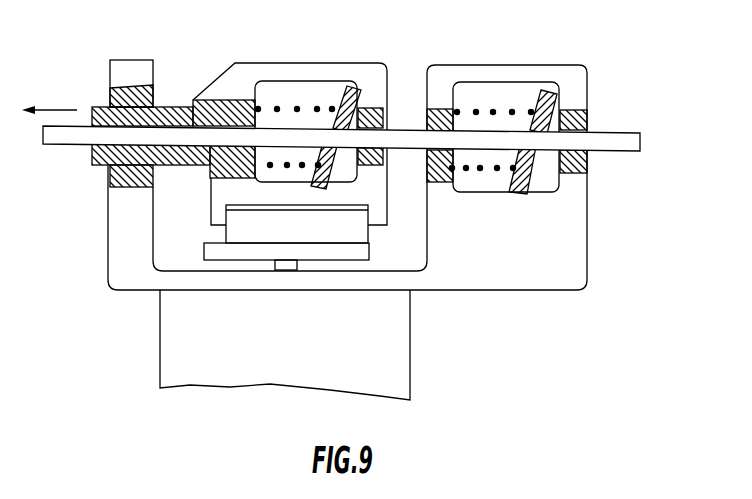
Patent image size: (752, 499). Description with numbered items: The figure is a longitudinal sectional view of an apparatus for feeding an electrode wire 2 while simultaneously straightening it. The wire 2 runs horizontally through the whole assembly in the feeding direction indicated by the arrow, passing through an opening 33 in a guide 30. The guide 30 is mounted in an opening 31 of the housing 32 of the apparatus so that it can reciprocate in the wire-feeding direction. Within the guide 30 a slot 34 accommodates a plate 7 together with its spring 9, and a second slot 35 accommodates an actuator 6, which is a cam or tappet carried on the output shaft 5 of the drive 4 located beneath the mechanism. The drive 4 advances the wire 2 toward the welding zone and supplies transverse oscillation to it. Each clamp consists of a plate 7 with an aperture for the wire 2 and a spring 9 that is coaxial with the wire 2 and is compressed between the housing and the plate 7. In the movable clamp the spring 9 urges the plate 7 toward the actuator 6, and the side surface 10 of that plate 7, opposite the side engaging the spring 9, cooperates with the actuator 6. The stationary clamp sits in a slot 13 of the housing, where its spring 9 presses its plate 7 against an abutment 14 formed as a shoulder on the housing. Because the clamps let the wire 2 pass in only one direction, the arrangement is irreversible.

The wire 2 is at (613, 137).
The drive 4 is at (290, 384).
The output shaft 5 is at (287, 270).
The actuator 6 is at (366, 237).
The plate 7 is at (350, 87).
The spring 9 is at (276, 102).
The side surface 10 is at (349, 161).
The slot 13 is at (492, 97).
The abutment 14 is at (335, 187).
The guide 30 is at (168, 108).
The opening 31 is at (128, 87).
The housing 32 is at (447, 75).
The opening 33 is at (385, 118).
The slot 34 is at (311, 89).
The slot 35 is at (264, 211).